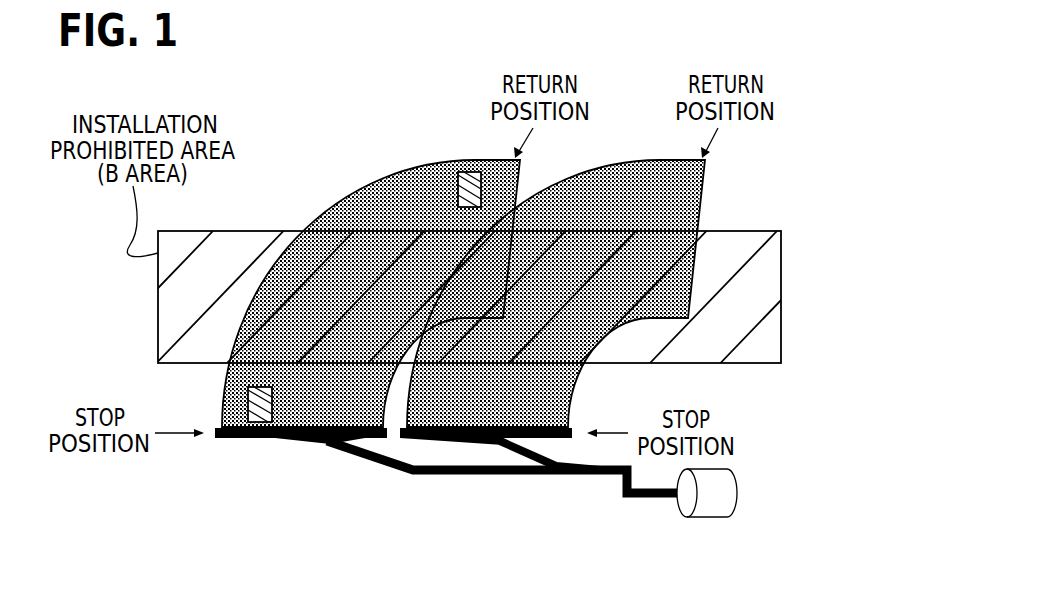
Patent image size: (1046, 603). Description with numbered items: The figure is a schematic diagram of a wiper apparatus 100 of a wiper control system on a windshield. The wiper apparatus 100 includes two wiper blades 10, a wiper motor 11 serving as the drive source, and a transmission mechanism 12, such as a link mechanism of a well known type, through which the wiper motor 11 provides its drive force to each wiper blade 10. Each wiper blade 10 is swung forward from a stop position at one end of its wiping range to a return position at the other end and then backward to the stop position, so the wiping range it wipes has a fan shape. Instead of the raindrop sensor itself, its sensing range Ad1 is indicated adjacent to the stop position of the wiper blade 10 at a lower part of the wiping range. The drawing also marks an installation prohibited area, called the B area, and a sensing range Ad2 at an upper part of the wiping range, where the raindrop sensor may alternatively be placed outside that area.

The wiper blade 10 is at (213, 438).
The wiper motor 11 is at (705, 518).
The transmission mechanism 12 is at (468, 475).
The wiper apparatus 100 is at (477, 480).
The sensing range Ad1 is at (268, 438).
The sensing range Ad2 is at (457, 173).